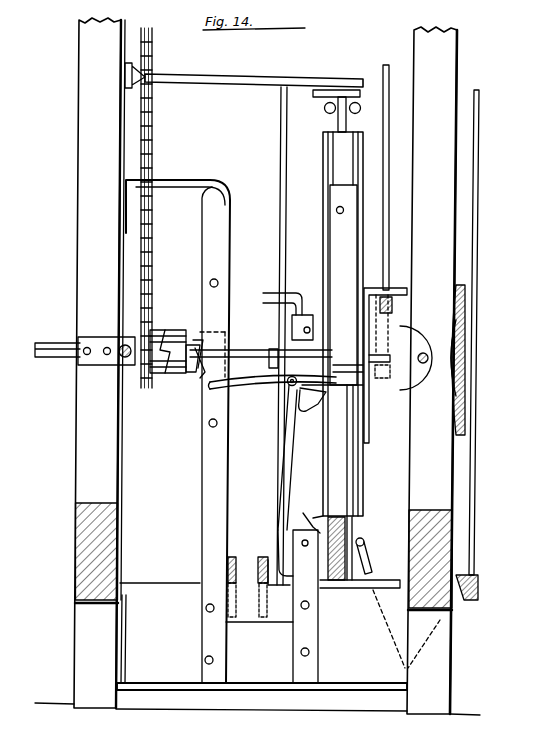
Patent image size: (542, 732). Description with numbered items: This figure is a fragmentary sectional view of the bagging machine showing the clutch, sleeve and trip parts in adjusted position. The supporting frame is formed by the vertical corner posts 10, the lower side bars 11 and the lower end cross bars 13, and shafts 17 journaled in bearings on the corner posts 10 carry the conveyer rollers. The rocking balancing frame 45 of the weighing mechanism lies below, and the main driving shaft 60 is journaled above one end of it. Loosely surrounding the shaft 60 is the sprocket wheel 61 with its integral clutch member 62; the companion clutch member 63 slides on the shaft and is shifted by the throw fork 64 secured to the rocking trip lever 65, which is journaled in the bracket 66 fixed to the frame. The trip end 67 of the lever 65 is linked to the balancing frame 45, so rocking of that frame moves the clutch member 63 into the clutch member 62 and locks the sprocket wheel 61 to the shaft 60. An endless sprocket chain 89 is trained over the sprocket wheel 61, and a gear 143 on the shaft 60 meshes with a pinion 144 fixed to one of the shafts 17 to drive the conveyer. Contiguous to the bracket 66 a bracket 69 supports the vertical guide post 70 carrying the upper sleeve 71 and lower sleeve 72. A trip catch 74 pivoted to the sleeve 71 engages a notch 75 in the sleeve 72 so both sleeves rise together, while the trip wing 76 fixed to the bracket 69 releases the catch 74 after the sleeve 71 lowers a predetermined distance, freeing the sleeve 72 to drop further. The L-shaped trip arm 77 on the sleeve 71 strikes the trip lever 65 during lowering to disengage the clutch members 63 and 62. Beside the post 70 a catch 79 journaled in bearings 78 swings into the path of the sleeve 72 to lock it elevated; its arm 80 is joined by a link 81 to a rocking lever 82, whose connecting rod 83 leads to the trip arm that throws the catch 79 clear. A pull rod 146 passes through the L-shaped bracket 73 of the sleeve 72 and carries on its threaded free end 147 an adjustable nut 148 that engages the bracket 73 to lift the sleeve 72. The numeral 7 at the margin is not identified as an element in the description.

The door post 7 is at (473, 370).
The vertical corner posts 10 is at (83, 217).
The lower side bars 11 is at (78, 566).
The lower end cross bars 13 is at (165, 692).
The shafts 17 is at (124, 358).
The rocking balancing frame 45 is at (236, 558).
The main driving shaft 60 is at (45, 357).
The sprocket wheel 61 is at (160, 328).
The clutch member 62 is at (155, 382).
The companion clutch member 63 is at (178, 378).
The throw fork 64 is at (197, 356).
The rocking trip lever 65 is at (255, 381).
The bracket 66 is at (224, 246).
The trip end 67 is at (336, 394).
The bracket 69 is at (219, 84).
The vertical guide post 70 is at (338, 121).
The upper sleeve 71 is at (331, 161).
The lower sleeve 72 is at (357, 476).
The L-shaped arm 73 is at (400, 292).
The trip catch 74 is at (301, 294).
The notch 75 is at (318, 413).
The trip wing 76 is at (271, 349).
The L-shaped trip arm 77 is at (340, 366).
The bearings 78 is at (310, 626).
The catch 79 is at (313, 517).
The arm 80 is at (363, 541).
The link 81 is at (369, 550).
The rocking lever 82 is at (472, 592).
The connecting rod 83 is at (478, 484).
The endless sprocket chain 89 is at (157, 149).
The gear 143 is at (466, 296).
The pinion 144 is at (458, 358).
The pull rod 146 is at (389, 163).
The threaded free end 147 is at (395, 312).
The nut 148 is at (391, 308).